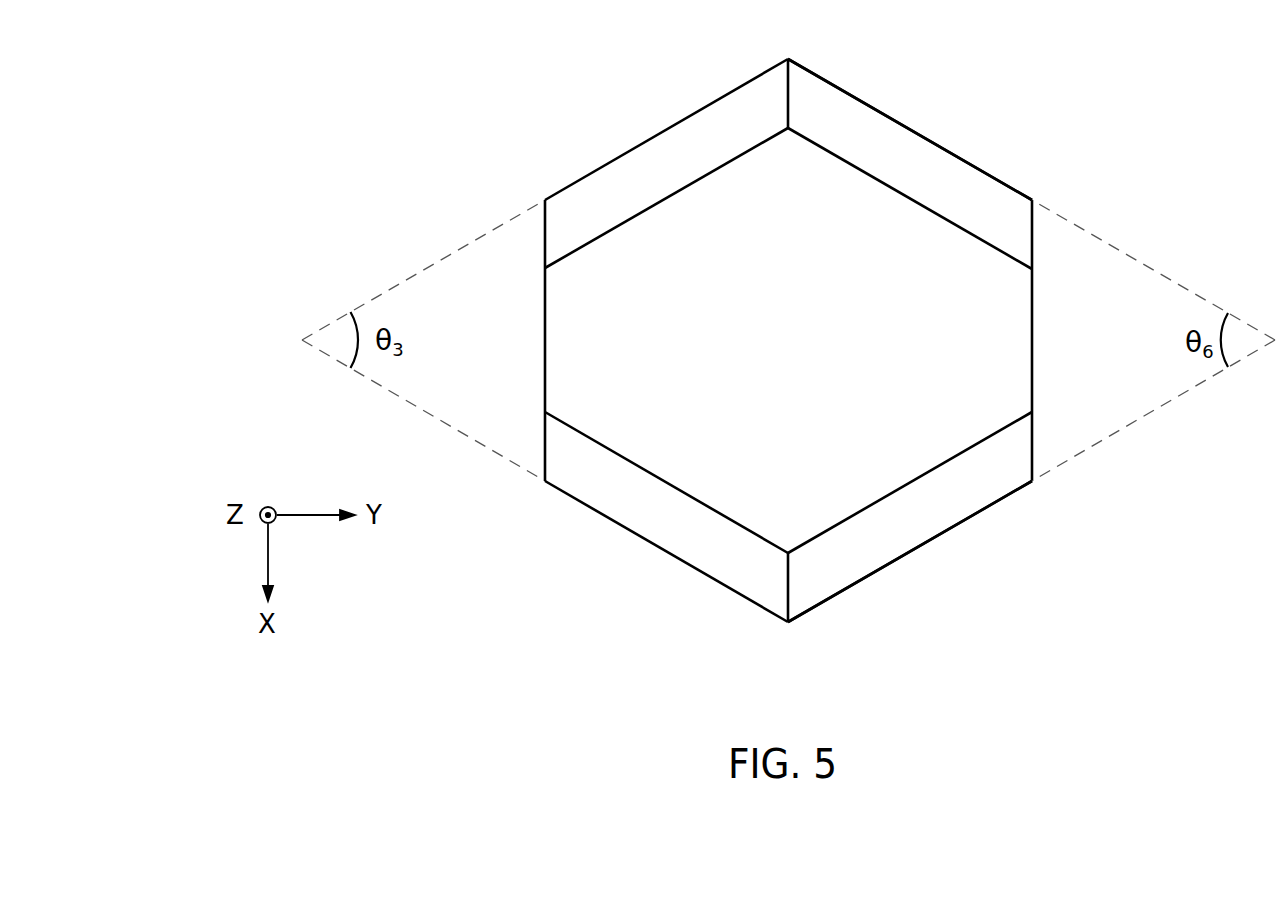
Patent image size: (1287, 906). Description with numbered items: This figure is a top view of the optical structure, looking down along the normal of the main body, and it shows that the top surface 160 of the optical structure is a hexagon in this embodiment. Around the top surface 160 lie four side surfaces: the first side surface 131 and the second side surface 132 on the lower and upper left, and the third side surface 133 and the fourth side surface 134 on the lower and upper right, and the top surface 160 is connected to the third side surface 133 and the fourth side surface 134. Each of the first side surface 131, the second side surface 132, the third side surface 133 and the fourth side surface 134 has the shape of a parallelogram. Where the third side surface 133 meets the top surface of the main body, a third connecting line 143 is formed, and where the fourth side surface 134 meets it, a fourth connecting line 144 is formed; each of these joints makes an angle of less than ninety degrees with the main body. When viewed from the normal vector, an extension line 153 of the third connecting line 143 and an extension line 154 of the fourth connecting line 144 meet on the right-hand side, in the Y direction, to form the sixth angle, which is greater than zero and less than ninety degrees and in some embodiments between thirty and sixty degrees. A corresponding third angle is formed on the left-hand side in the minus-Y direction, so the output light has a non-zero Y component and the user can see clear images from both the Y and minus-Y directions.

The first side surface 131 is at (710, 545).
The second side surface 132 is at (710, 164).
The third side surface 133 is at (912, 545).
The fourth side surface 134 is at (912, 164).
The third connecting line 143 is at (947, 533).
The fourth connecting line 144 is at (945, 148).
The extension line 153 is at (1153, 410).
The extension line 154 is at (1153, 272).
The top surface 160 is at (811, 355).